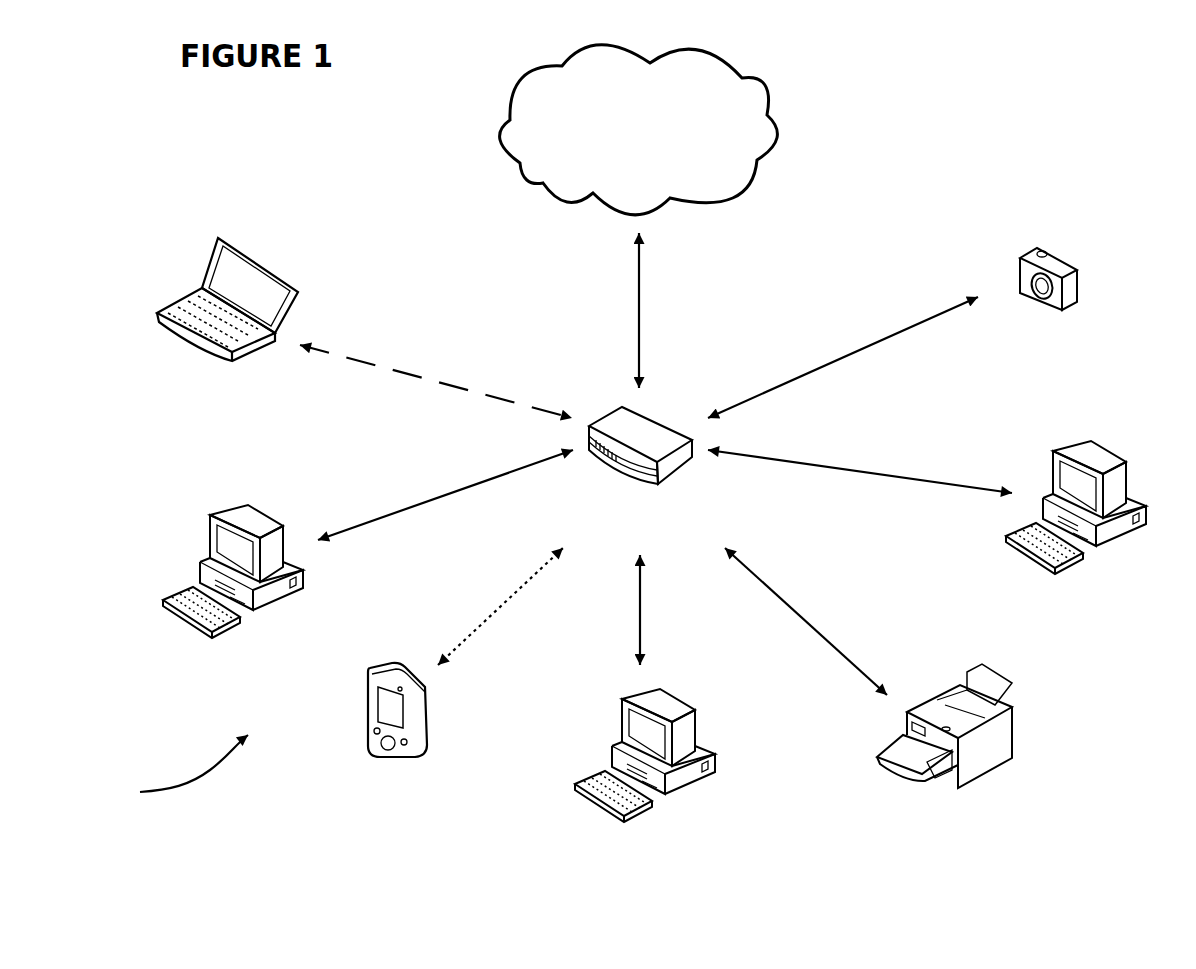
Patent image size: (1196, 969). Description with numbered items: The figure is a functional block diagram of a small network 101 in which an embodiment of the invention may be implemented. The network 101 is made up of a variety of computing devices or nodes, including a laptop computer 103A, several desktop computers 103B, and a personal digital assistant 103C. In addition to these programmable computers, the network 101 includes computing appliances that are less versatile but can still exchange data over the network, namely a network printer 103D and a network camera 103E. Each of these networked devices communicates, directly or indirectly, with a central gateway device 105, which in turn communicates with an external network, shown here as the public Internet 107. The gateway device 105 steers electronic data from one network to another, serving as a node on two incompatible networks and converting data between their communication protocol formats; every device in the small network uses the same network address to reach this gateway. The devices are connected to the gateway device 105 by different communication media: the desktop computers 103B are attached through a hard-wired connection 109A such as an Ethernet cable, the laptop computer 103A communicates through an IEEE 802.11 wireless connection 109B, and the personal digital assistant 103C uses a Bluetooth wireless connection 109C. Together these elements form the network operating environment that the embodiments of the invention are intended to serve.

The network 101 is at (175, 771).
The laptop computer 103A is at (227, 335).
The desktop computer 103B is at (654, 671).
The personal digital assistant 103C is at (395, 738).
The printer 103D is at (947, 752).
The camera 103E is at (1051, 320).
The gateway device 105 is at (640, 472).
The Internet 107 is at (639, 130).
The hard-wired connection 109A is at (400, 512).
The wireless connection 109B is at (420, 378).
The Bluetooth wireless connection 109C is at (487, 618).